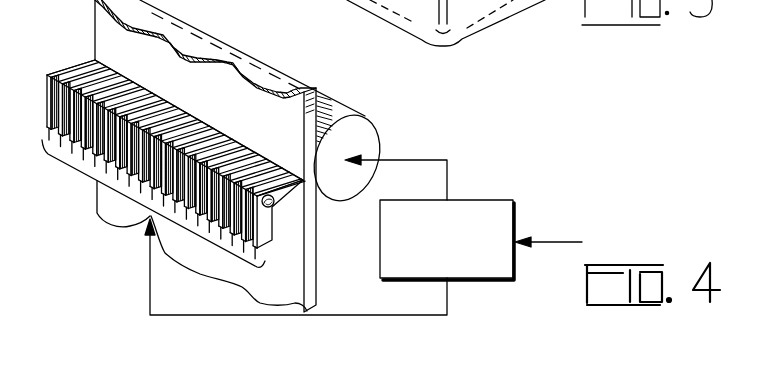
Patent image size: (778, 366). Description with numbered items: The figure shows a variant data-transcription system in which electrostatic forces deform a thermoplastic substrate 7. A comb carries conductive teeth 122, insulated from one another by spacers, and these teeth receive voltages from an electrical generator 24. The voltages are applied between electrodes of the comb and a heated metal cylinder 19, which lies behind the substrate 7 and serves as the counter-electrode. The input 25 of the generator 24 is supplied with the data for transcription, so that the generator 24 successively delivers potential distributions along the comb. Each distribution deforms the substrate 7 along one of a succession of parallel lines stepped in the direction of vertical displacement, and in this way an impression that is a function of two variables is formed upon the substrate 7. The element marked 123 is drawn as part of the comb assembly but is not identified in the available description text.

The thermoplastic substrate 7 is at (107, 32).
The heated metal cylinder 19 is at (350, 195).
The electrical generator 24 is at (463, 213).
The input of the generator 25 is at (551, 242).
The conductive teeth 122 is at (281, 203).
The electrode connection strip 123 is at (148, 219).